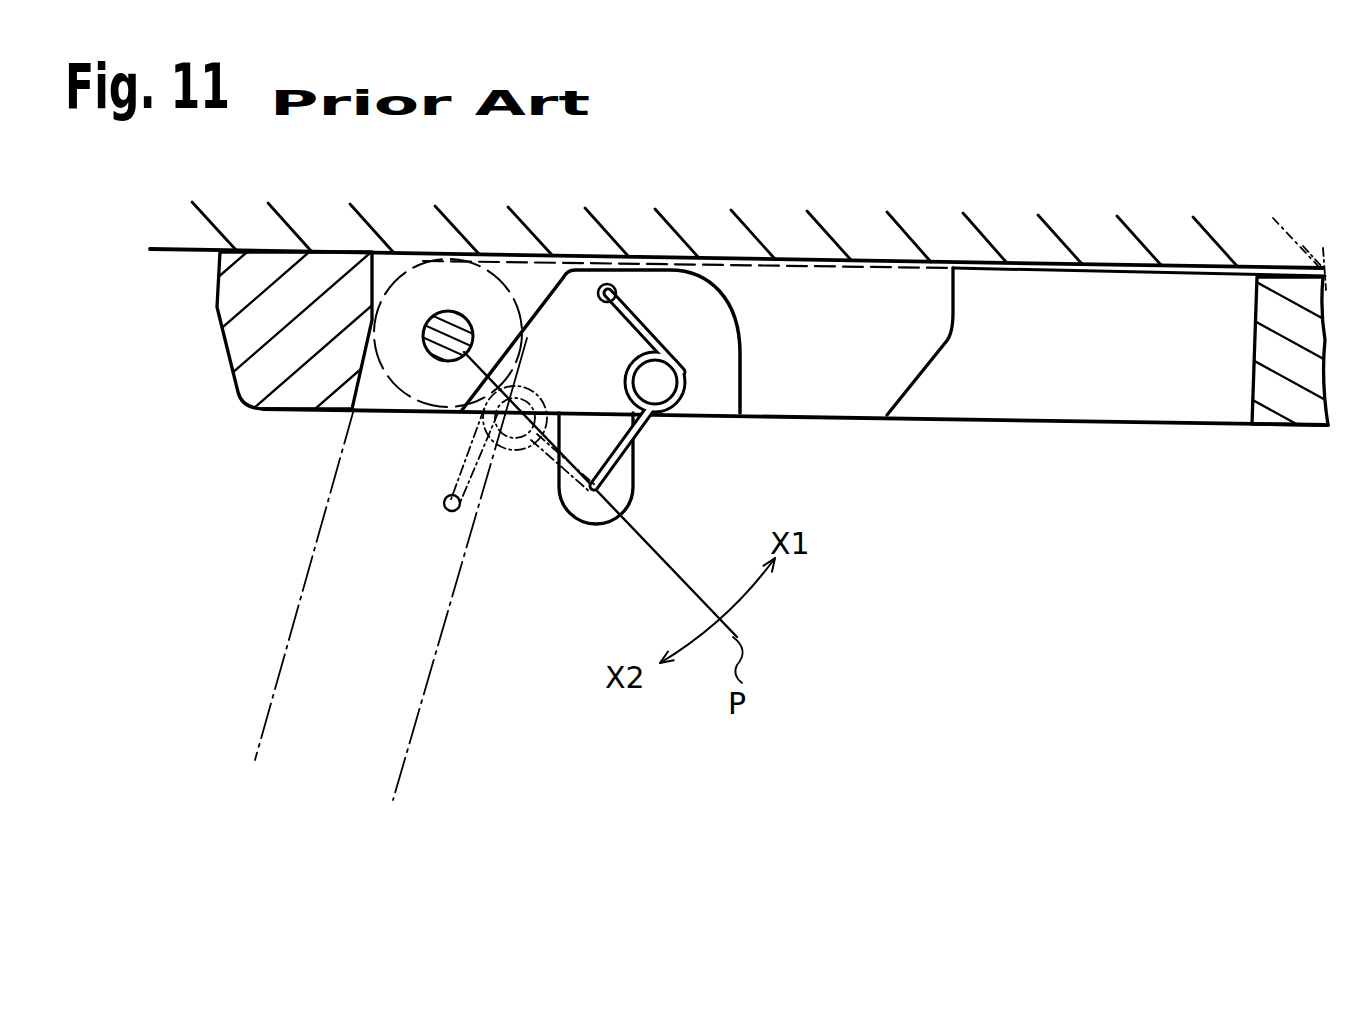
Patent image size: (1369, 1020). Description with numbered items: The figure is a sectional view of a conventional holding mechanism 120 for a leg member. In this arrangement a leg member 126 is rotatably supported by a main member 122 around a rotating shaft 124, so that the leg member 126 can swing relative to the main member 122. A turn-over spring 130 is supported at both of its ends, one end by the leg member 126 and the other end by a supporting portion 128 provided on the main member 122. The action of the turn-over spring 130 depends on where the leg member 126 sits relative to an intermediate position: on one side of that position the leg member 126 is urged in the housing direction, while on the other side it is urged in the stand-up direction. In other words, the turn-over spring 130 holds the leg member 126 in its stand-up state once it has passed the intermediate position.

The holding mechanism 120 is at (868, 173).
The main member 122 is at (845, 390).
The rotating shaft 124 is at (443, 308).
The leg member 126 is at (1100, 397).
The supporting portion 128 is at (588, 512).
The turn-over spring 130 is at (660, 420).